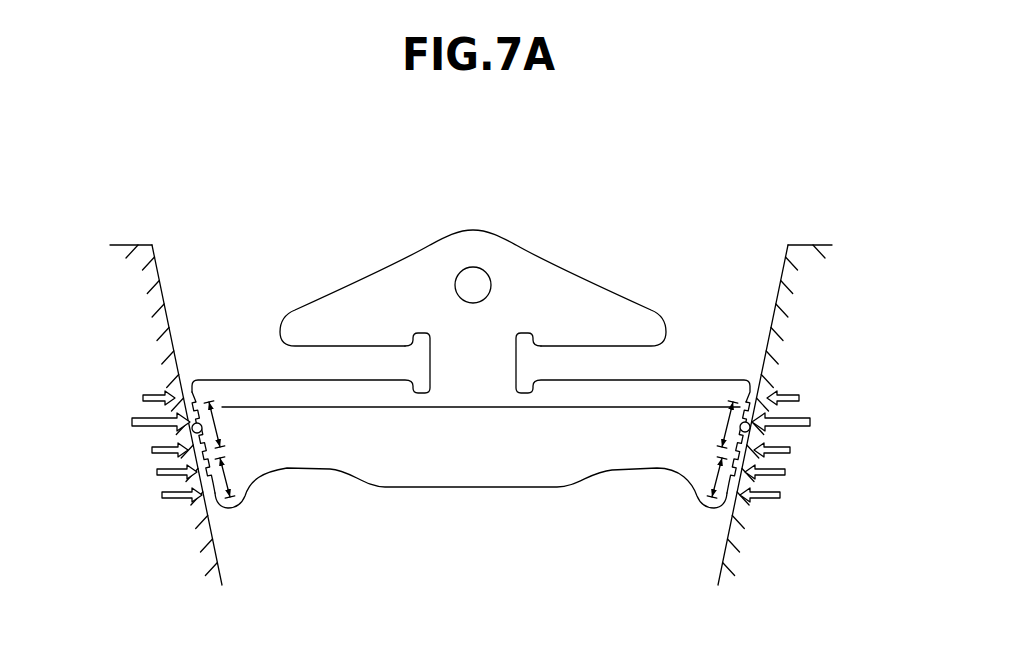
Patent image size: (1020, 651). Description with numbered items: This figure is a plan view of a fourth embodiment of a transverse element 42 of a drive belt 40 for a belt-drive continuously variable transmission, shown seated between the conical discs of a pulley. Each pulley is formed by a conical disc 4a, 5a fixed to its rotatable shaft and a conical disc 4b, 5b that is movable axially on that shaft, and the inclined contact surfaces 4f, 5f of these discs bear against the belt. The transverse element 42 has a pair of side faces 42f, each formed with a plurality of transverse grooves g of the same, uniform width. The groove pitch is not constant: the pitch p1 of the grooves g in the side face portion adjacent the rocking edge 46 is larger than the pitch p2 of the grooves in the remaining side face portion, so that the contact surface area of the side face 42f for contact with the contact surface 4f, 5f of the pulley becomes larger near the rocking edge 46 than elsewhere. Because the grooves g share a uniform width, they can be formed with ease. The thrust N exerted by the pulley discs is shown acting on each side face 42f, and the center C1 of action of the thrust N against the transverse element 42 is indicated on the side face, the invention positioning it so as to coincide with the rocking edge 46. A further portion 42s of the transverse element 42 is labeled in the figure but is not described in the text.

The drive belt 40 is at (472, 343).
The transverse element 42 is at (386, 266).
The side face 42f is at (193, 400).
The seat portion of clip 42s is at (285, 380).
The rocking edge 46 is at (447, 408).
The contact surface of primary pulley 4f is at (477, 379).
The contact surface of secondary pulley 5f is at (160, 283).
The movable conical disc of primary pulley 4b is at (136, 410).
The movable conical disc of secondary pulley 5b is at (135, 293).
The fixed conical disc of primary pulley 4a is at (805, 410).
The fixed conical disc of secondary pulley 5a is at (887, 293).
The center of action of the thrust C1 is at (850, 440).
The thrust N is at (470, 446).
The transverse grooves g is at (203, 477).
The pitch of grooves adjacent rocking edge p1 is at (218, 413).
The pitch of grooves in remaining side face portion p2 is at (228, 477).